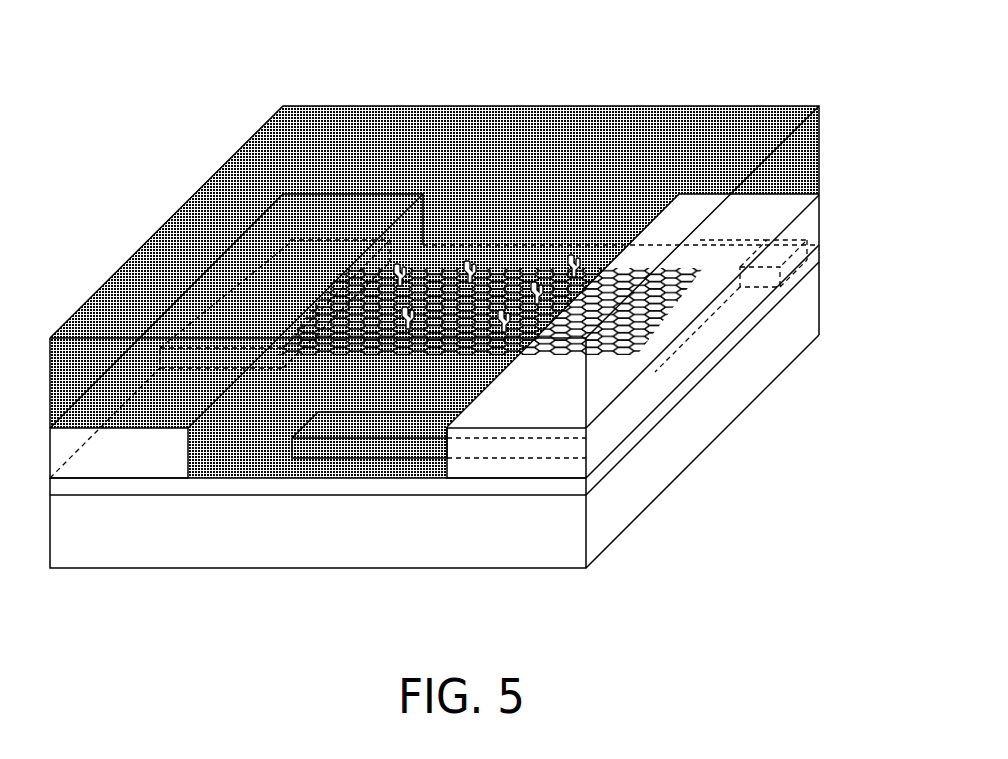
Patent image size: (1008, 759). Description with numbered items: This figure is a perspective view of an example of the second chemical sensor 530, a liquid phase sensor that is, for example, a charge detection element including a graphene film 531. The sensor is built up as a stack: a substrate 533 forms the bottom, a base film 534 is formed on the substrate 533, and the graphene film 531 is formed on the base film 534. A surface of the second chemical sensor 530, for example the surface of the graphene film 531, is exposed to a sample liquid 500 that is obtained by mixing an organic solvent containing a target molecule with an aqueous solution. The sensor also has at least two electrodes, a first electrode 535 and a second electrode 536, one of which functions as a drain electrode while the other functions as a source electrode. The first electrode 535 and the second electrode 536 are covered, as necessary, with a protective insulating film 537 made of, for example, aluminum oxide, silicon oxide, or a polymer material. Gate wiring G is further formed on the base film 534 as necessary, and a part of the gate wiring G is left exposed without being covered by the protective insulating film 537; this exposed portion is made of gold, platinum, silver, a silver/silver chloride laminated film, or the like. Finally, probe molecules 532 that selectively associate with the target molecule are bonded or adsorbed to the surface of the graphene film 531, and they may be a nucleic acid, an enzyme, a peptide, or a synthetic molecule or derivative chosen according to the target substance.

The sample liquid 500 is at (539, 133).
The second chemical sensor 530 is at (813, 72).
The graphene film 531 is at (435, 273).
The probe molecule 532 is at (567, 257).
The substrate 533 is at (287, 535).
The base film 534 is at (357, 486).
The first electrode 535 is at (293, 247).
The second electrode 536 is at (735, 258).
The protective insulating film 537 is at (124, 460).
The gate wiring G is at (417, 450).